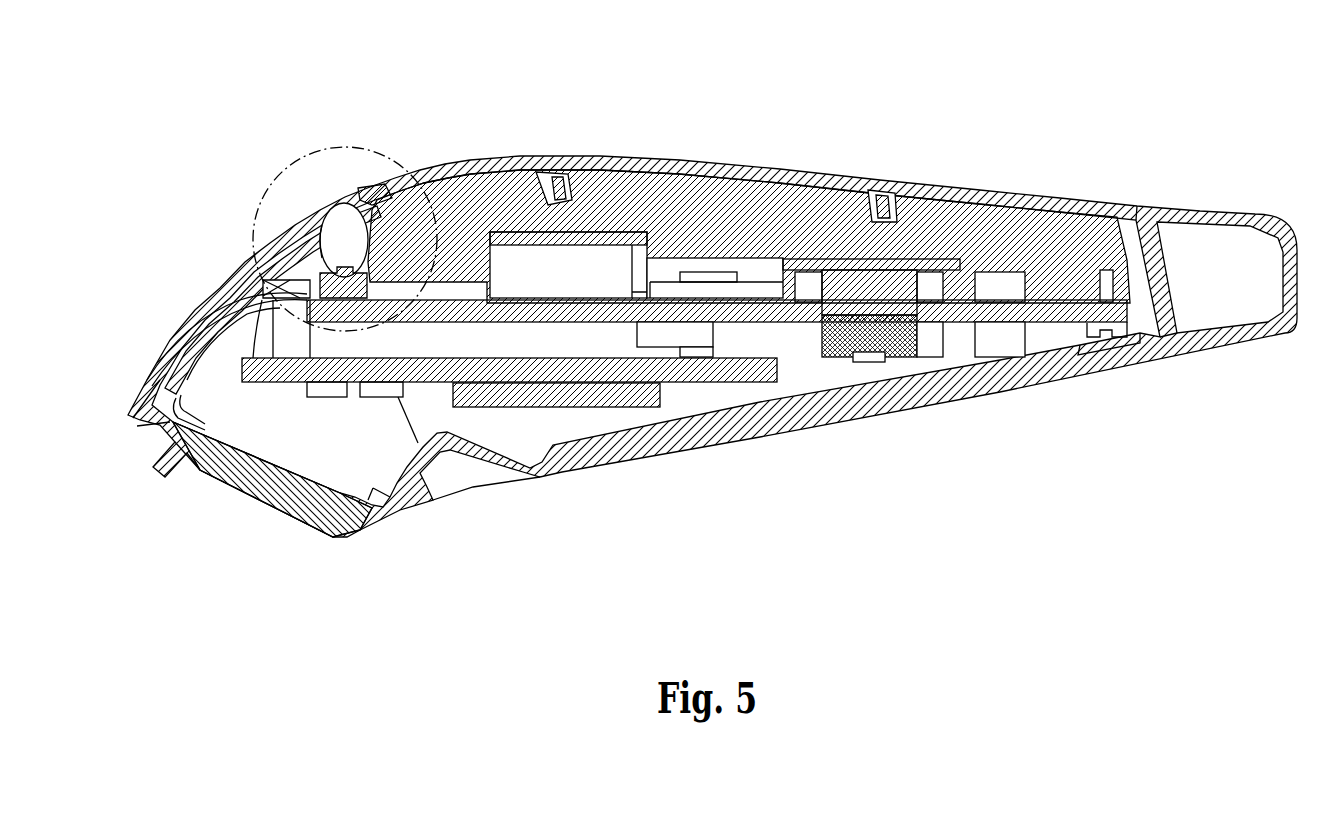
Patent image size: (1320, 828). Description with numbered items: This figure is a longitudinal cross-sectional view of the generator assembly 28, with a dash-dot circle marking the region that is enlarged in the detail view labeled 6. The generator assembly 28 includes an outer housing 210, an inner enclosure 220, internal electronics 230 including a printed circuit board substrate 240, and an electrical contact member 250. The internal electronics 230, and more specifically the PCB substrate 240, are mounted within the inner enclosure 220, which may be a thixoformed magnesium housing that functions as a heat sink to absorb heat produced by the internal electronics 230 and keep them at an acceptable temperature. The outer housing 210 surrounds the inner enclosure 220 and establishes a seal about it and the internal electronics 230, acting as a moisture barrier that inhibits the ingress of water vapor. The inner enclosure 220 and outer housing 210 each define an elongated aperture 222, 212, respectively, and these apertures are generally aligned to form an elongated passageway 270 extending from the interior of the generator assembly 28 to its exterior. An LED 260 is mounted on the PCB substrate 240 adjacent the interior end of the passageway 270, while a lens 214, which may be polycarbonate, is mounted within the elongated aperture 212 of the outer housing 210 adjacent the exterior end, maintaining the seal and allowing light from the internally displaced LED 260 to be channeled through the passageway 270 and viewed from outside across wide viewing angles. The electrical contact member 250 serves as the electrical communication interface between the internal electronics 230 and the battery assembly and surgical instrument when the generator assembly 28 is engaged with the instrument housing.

The generator assembly 28 is at (880, 72).
The outer housing 210 is at (968, 200).
The inner enclosure 220 is at (667, 192).
The internal electronics 230 is at (542, 335).
The printed circuit board substrate 240 is at (667, 313).
The electrical contact member 250 is at (238, 485).
The LED 260 is at (327, 287).
The elongated passageway 270 is at (338, 245).
The elongated aperture 212 is at (365, 193).
The lens 214 is at (333, 200).
The elongated aperture 222 is at (340, 230).
The detail view circle (FIG. 6) 6 is at (338, 150).